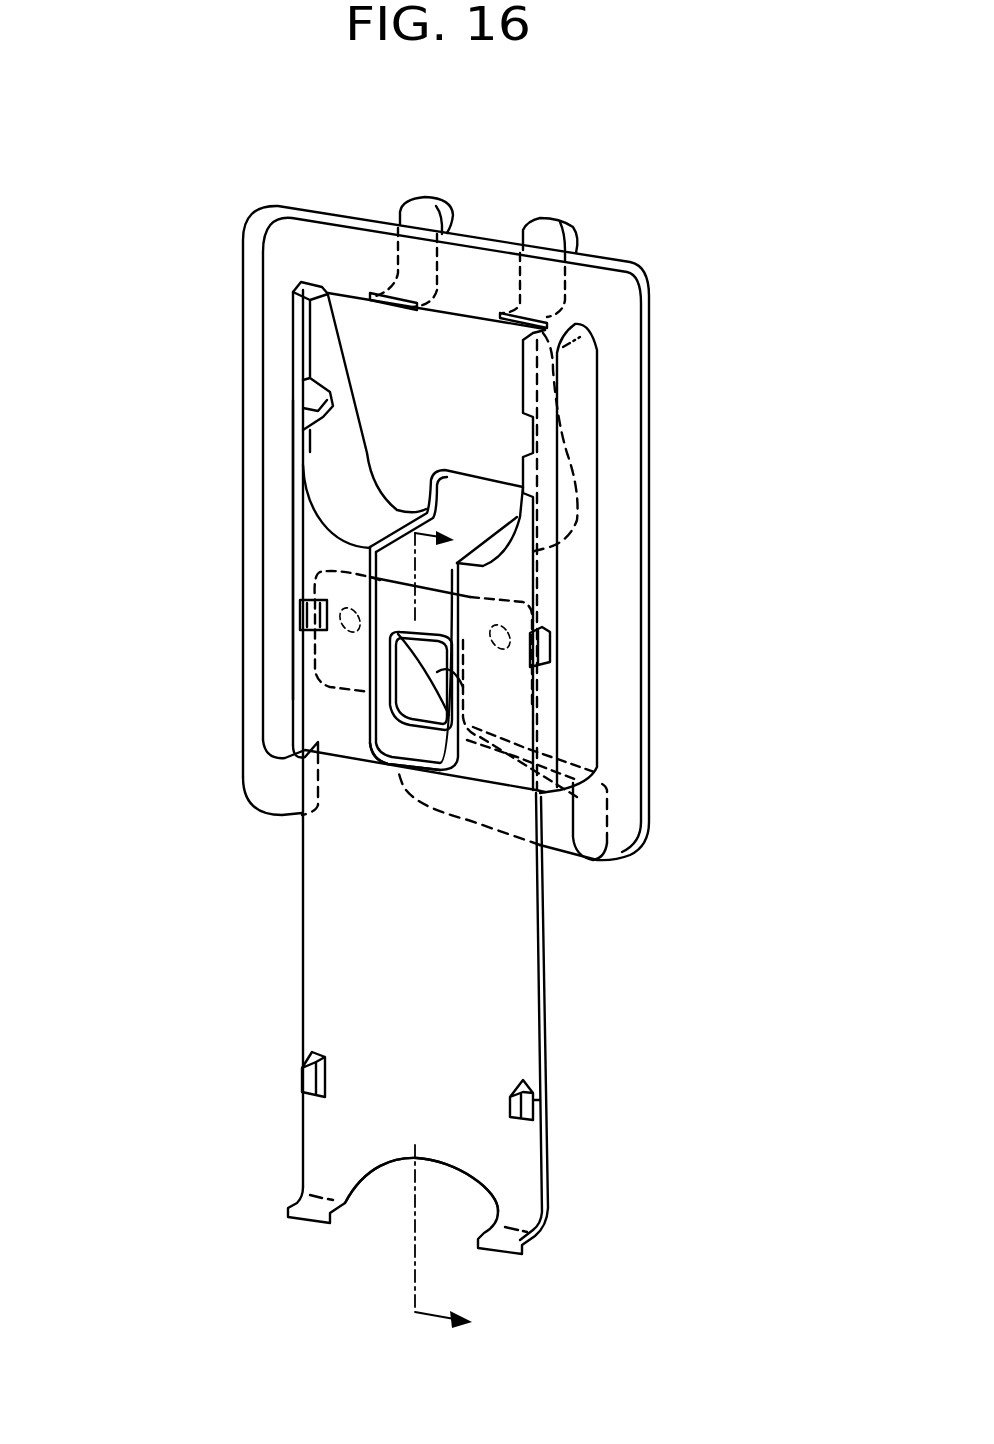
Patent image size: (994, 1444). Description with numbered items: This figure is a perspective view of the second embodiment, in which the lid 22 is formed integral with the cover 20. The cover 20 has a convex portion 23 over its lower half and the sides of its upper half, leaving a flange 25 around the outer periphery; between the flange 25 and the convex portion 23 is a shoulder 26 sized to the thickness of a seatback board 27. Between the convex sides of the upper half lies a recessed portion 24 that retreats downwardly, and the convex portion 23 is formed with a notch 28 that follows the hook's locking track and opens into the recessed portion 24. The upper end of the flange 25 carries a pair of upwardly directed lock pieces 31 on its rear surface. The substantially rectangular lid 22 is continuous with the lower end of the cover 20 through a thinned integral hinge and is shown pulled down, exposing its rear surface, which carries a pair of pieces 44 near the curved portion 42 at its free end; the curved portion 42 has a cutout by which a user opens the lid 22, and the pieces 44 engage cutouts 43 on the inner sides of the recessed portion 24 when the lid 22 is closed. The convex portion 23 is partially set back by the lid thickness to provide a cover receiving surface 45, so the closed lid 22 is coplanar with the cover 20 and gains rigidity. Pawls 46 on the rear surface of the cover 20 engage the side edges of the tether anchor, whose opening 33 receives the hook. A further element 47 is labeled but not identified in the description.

The cover 20 is at (298, 190).
The lid 22 is at (355, 968).
The convex portion 23 is at (277, 513).
The recessed portion 24 is at (403, 447).
The flange 25 is at (617, 370).
The shoulder 26 is at (572, 575).
The seatback board 27 is at (388, 620).
The notch 28 is at (440, 682).
The lock pieces 31 is at (430, 205).
The opening 33 is at (400, 633).
The curved portion 42 is at (417, 1158).
The cutouts 43 is at (303, 398).
The pieces 44 is at (300, 1088).
The cover receiving surface 45 is at (330, 550).
The pawls 46 is at (300, 620).
The bent portion 47 is at (378, 770).